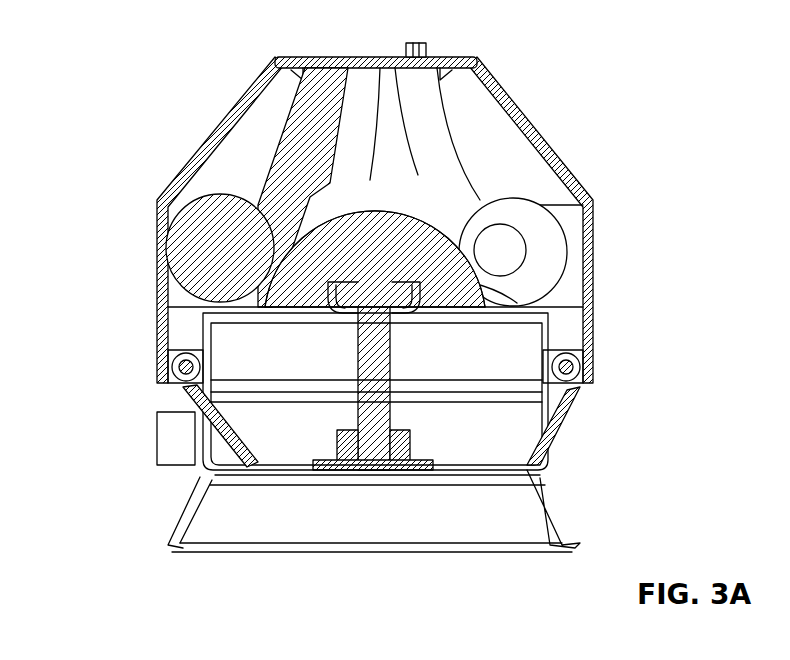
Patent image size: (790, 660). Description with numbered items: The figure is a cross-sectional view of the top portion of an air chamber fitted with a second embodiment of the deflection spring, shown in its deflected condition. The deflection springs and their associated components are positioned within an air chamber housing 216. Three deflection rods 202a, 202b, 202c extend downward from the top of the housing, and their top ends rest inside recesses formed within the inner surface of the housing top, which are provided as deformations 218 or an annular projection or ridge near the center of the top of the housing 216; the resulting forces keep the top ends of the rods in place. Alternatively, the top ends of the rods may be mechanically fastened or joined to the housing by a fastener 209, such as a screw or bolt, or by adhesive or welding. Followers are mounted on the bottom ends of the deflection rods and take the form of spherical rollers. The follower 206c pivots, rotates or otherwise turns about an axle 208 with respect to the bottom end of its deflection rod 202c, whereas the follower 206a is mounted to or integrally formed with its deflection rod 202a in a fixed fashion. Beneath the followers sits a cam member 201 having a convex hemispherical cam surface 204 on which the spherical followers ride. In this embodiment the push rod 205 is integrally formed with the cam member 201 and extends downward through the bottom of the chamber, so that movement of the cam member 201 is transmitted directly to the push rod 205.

The cam member 201 is at (487, 285).
The deflection rod 202a is at (322, 115).
The deflection rod 202b is at (370, 92).
The deflection rod 202c is at (425, 122).
The convex hemispherical cam surface 204 is at (393, 180).
The push rod 205 is at (390, 410).
The follower 206a is at (187, 248).
The follower 206c is at (537, 232).
The axle 208 is at (473, 280).
The fastener 209 is at (418, 43).
The air chamber housing 216 is at (532, 128).
The deformations 218 is at (292, 55).